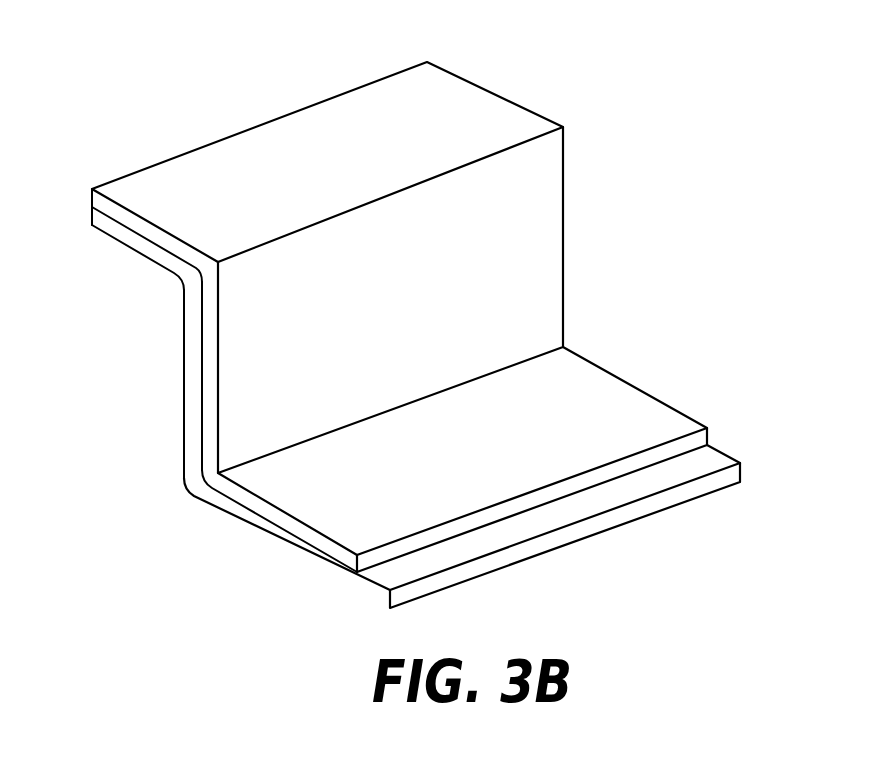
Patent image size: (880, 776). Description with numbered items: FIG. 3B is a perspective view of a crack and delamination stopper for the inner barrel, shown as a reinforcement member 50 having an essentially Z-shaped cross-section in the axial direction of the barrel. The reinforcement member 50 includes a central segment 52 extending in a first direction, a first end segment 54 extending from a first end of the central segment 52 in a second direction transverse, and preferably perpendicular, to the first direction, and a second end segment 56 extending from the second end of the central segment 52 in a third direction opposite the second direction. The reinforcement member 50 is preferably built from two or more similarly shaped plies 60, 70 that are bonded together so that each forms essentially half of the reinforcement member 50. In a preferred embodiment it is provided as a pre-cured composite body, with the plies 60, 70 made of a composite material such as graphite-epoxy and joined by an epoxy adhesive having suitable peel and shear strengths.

The reinforcement member 50 is at (607, 87).
The central segment 52 is at (562, 275).
The first end segment 54 is at (258, 533).
The second end segment 56 is at (339, 93).
The ply 60 is at (191, 338).
The ply 70 is at (408, 323).